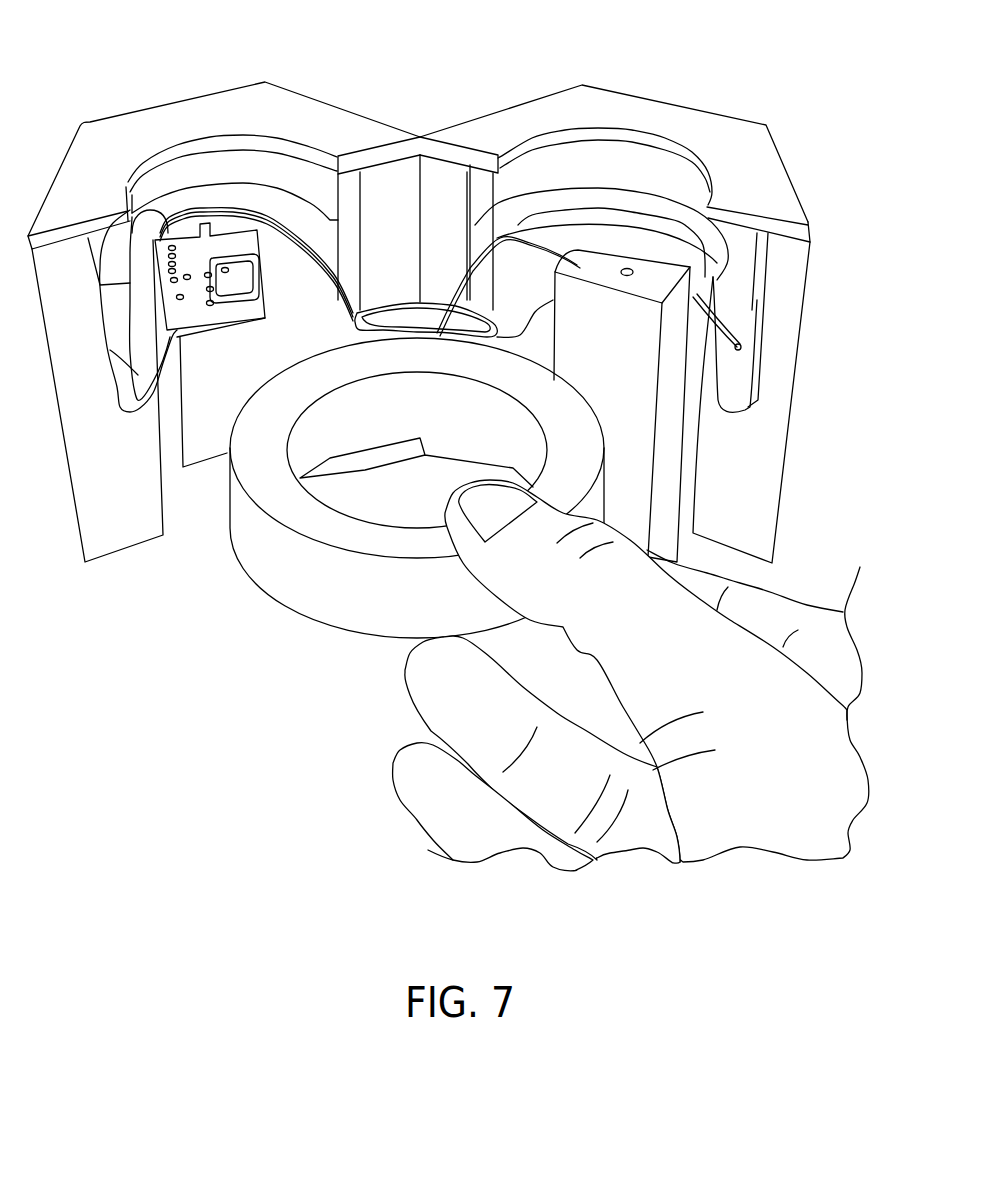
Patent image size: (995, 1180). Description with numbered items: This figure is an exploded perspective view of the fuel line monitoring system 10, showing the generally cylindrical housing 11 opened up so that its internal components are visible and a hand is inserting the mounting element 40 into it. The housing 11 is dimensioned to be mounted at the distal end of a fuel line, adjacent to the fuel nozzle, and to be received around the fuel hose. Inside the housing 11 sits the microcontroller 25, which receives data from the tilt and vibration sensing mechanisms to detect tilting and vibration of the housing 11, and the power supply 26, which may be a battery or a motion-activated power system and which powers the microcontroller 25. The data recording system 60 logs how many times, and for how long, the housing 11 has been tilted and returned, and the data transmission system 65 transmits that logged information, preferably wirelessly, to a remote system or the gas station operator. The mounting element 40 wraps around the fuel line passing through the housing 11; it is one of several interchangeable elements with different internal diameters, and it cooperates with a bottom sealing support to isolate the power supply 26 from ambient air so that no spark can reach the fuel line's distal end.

The monitoring system 10 is at (556, 38).
The housing 11 is at (332, 125).
The microcontroller 25 is at (207, 245).
The power supply 26 is at (629, 268).
The mounting element 40 is at (470, 418).
The data recording system 60 is at (173, 312).
The data transmission system 65 is at (240, 315).